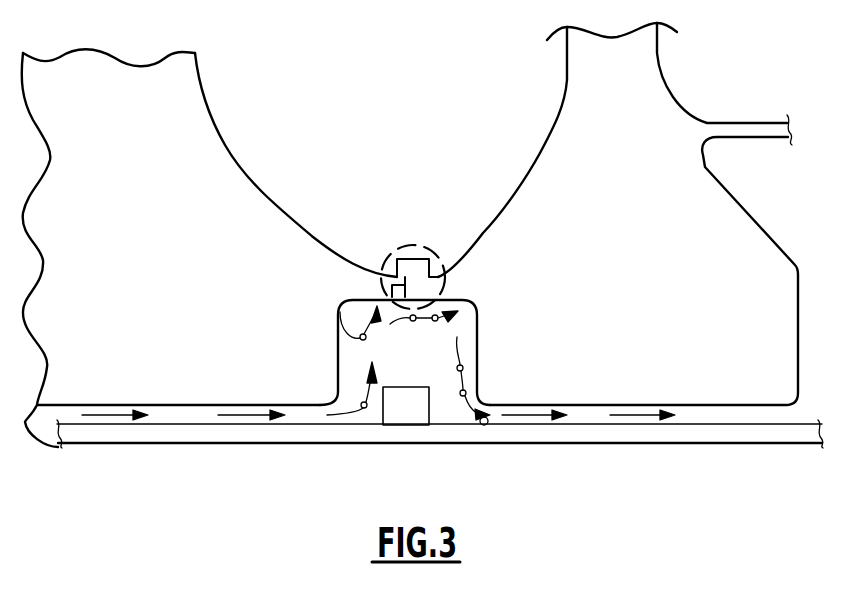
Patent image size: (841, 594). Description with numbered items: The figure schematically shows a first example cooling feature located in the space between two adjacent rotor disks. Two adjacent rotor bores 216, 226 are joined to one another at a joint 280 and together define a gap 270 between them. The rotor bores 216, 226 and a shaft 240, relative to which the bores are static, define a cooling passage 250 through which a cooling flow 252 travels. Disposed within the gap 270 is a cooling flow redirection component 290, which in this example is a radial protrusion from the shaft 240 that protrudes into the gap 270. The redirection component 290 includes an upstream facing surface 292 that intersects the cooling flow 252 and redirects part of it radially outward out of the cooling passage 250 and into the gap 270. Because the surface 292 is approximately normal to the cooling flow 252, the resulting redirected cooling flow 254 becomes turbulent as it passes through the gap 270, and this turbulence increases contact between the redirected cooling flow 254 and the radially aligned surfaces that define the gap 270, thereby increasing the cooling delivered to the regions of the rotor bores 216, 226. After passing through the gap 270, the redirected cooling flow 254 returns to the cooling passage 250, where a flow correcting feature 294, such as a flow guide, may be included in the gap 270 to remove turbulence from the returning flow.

The rotor bore 216 is at (187, 289).
The rotor bore 226 is at (659, 288).
The shaft 240 is at (583, 435).
The cooling passage 250 is at (165, 417).
The cooling flow 252 is at (233, 415).
The redirected cooling flow 254 is at (340, 312).
The gap 270 is at (393, 346).
The joint 280 is at (437, 252).
The cooling flow redirection component 290 is at (415, 408).
The upstream facing surface 292 is at (380, 413).
The flow correcting feature 294 is at (485, 425).